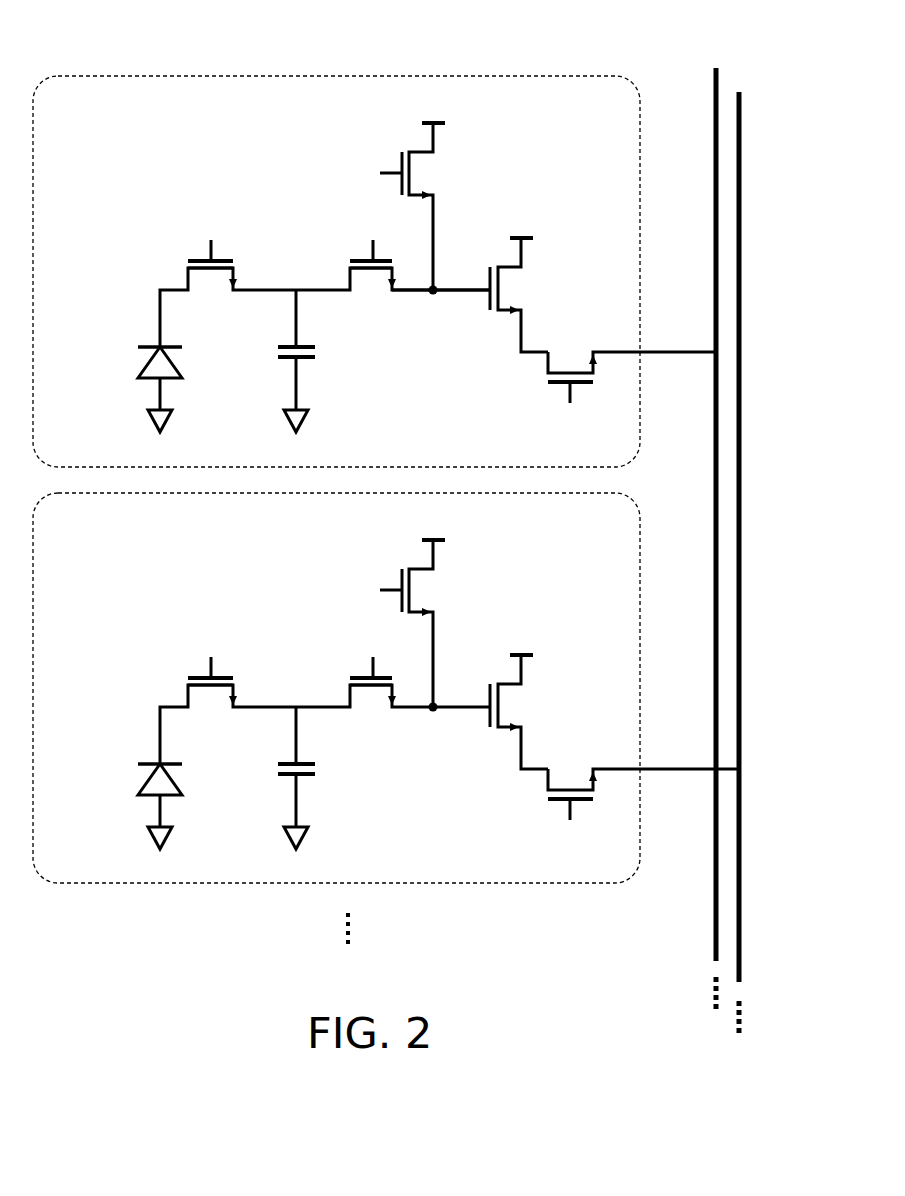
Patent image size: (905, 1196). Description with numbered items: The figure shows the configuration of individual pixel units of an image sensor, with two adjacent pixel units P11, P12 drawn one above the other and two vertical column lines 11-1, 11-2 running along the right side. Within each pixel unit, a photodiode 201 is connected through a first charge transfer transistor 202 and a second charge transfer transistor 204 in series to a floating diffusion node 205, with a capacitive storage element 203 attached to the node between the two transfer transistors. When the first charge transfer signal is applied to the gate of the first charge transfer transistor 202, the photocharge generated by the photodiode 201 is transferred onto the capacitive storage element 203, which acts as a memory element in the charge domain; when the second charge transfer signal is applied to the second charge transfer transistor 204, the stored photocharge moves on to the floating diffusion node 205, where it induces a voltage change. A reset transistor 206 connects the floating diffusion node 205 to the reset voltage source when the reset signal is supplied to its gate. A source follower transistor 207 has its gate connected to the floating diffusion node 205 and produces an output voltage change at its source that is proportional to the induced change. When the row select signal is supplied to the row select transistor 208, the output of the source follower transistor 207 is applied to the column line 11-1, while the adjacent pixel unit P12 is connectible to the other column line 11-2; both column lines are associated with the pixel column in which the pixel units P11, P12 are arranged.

The photodiode 201 is at (133, 376).
The first charge transfer transistor 202 is at (187, 273).
The capacitive storage element 203 is at (279, 371).
The second charge transfer transistor 204 is at (352, 268).
The floating diffusion node 205 is at (423, 300).
The reset transistor 206 is at (430, 153).
The source follower transistor 207 is at (513, 267).
The row select transistor 208 is at (542, 368).
The pixel unit P11 is at (160, 74).
The pixel unit P12 is at (79, 888).
The column line 11-1 is at (714, 100).
The column line 11-2 is at (740, 127).